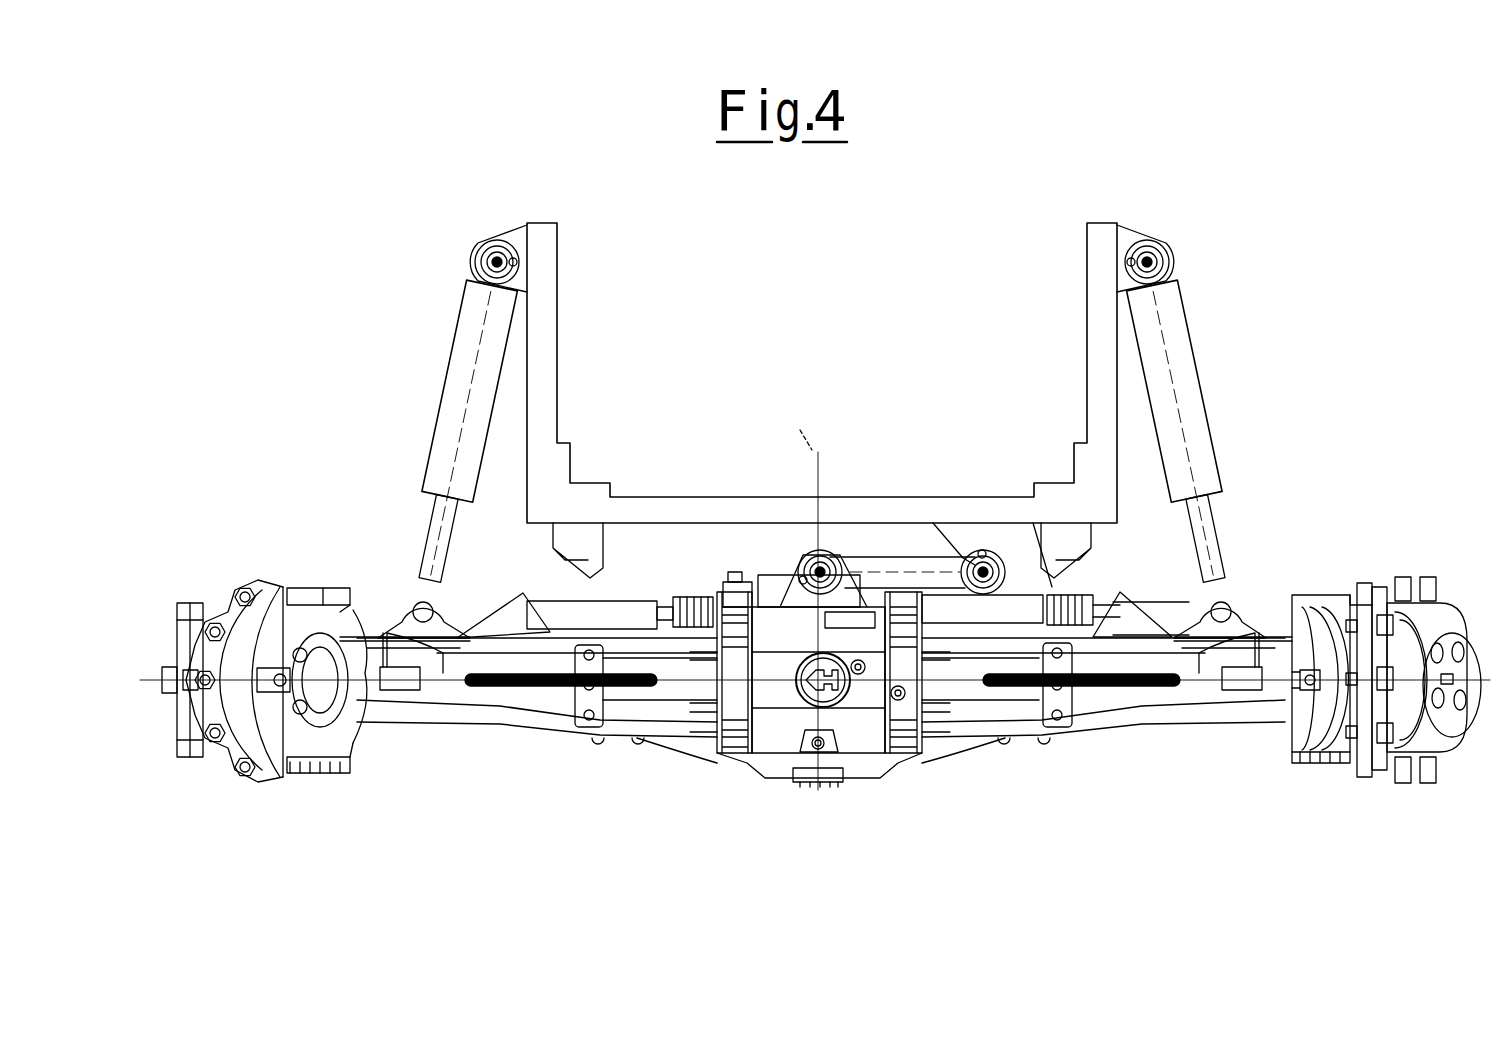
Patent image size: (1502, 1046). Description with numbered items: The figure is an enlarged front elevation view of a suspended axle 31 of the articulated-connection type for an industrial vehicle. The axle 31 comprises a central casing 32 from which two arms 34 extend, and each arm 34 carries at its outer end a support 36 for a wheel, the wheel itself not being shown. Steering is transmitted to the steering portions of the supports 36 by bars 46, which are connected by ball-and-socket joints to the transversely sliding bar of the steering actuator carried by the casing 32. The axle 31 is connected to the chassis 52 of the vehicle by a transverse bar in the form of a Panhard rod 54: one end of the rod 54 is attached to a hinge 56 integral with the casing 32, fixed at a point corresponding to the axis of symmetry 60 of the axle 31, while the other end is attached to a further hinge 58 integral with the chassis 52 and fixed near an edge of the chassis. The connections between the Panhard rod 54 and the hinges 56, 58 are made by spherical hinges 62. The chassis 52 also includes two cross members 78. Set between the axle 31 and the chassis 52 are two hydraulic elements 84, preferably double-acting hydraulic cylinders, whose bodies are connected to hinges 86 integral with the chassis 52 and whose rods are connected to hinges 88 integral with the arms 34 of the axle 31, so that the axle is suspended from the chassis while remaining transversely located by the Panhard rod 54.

The axle 31 is at (733, 803).
The central casing 32 is at (855, 730).
The arms 34 is at (527, 700).
The support 36 is at (272, 775).
The bars 46 is at (556, 610).
The chassis 52 is at (547, 351).
The Panhard rod 54 is at (908, 563).
The hinge 56 is at (797, 600).
The hinge 58 is at (963, 537).
The axis of symmetry 60 is at (803, 594).
The spherical hinges 62 is at (822, 572).
The cross members 78 is at (652, 547).
The hydraulic elements 84 is at (457, 373).
The hinges 86 is at (520, 240).
The hinges 88 is at (397, 598).